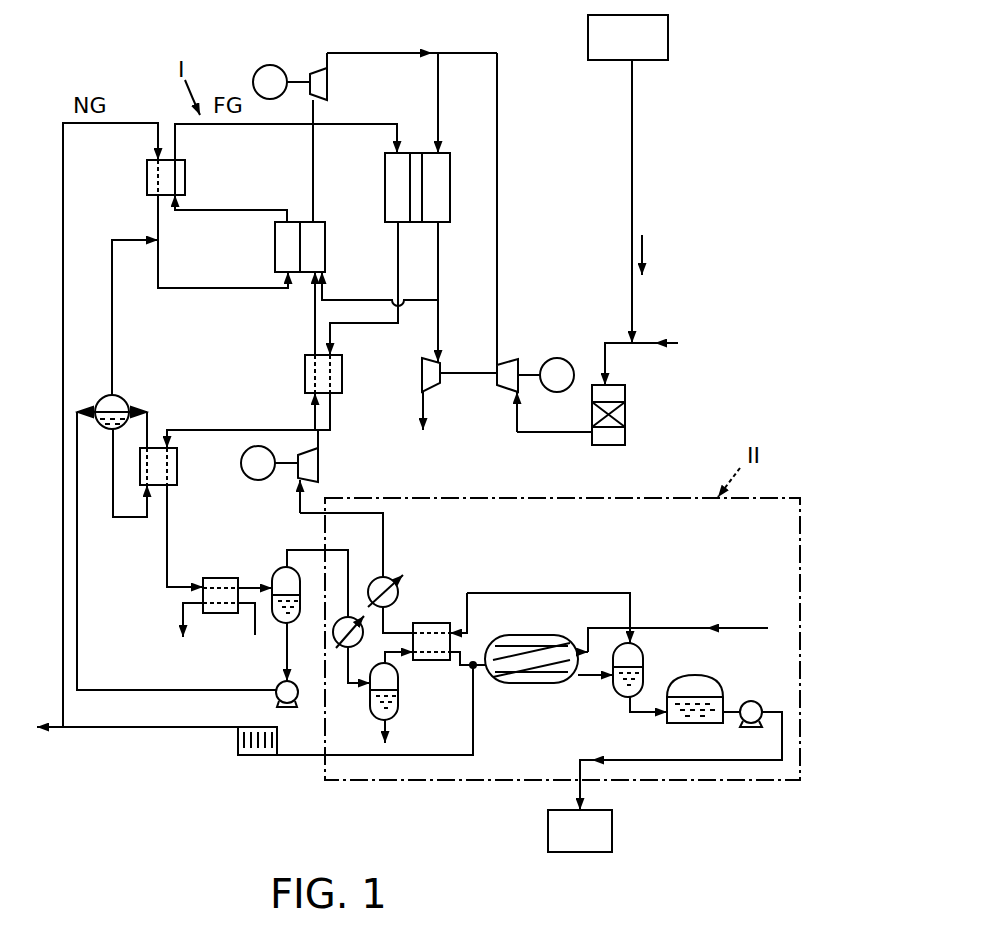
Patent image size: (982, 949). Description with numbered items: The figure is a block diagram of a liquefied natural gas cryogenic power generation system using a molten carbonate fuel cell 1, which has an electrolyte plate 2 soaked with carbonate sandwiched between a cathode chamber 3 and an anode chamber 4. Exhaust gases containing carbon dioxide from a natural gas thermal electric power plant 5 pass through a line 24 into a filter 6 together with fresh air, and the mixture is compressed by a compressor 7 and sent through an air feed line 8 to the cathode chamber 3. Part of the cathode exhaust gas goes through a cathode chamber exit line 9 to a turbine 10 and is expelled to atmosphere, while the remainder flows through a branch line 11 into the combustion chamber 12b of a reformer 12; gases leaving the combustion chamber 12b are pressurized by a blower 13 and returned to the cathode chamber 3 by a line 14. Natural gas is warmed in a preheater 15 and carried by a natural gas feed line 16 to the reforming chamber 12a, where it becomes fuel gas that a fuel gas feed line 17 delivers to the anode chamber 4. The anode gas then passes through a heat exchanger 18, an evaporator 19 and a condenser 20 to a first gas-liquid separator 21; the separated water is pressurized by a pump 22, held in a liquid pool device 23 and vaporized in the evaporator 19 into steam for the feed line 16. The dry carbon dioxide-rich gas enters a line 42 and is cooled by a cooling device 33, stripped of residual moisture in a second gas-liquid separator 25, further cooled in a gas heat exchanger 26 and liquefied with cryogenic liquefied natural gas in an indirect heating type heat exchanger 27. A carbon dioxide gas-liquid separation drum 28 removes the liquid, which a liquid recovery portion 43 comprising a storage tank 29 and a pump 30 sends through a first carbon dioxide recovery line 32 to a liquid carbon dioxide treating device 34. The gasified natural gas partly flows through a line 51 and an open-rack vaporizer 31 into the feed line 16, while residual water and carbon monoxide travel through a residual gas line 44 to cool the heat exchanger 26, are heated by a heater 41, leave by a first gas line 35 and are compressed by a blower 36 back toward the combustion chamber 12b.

The molten carbonate fuel cell 1 is at (450, 150).
The electrolyte plate 2 is at (416, 152).
The cathode chamber 3 is at (450, 200).
The anode chamber 4 is at (388, 195).
The natural gas thermal electric power plant 5 is at (588, 46).
The filter 6 is at (628, 432).
The compressor 7 is at (508, 360).
The air feed line 8 is at (497, 196).
The cathode chamber exit line 9 is at (440, 292).
The turbine 10 is at (420, 380).
The branch line 11 is at (380, 300).
The reformer 12 is at (298, 212).
The reforming chamber 12a is at (278, 260).
The combustion chamber 12b is at (342, 243).
The blower 13 is at (318, 66).
The line 14 is at (388, 52).
The preheater 15 is at (147, 178).
The natural gas feed line 16 is at (247, 290).
The fuel gas feed line 17 is at (228, 210).
The heat exchanger 18 is at (305, 386).
The evaporator 19 is at (178, 476).
The condenser 20 is at (222, 578).
The first gas-liquid separator 21 is at (280, 567).
The pump 22 is at (277, 684).
The liquid pool device 23 is at (125, 398).
The line 24 is at (632, 185).
The second gas-liquid separator 25 is at (372, 715).
The gas heat exchanger 26 is at (420, 623).
The indirect heating type heat exchanger 27 is at (550, 636).
The CO2 gas-liquid separation drum 28 is at (622, 698).
The storage tank 29 is at (688, 720).
The pump 30 is at (749, 700).
The open-rack vaporizer 31 is at (258, 755).
The first CO2 recovery line 32 is at (605, 758).
The cooling device 33 is at (340, 650).
The liquid CO2 treating device 34 is at (560, 831).
The first gas line 35 is at (320, 443).
The blower 36 is at (319, 470).
The heater 41 is at (403, 575).
The line 42 is at (350, 568).
The liquid recovery portion 43 is at (777, 645).
The residual gas line 44 is at (607, 593).
The line 51 is at (473, 727).